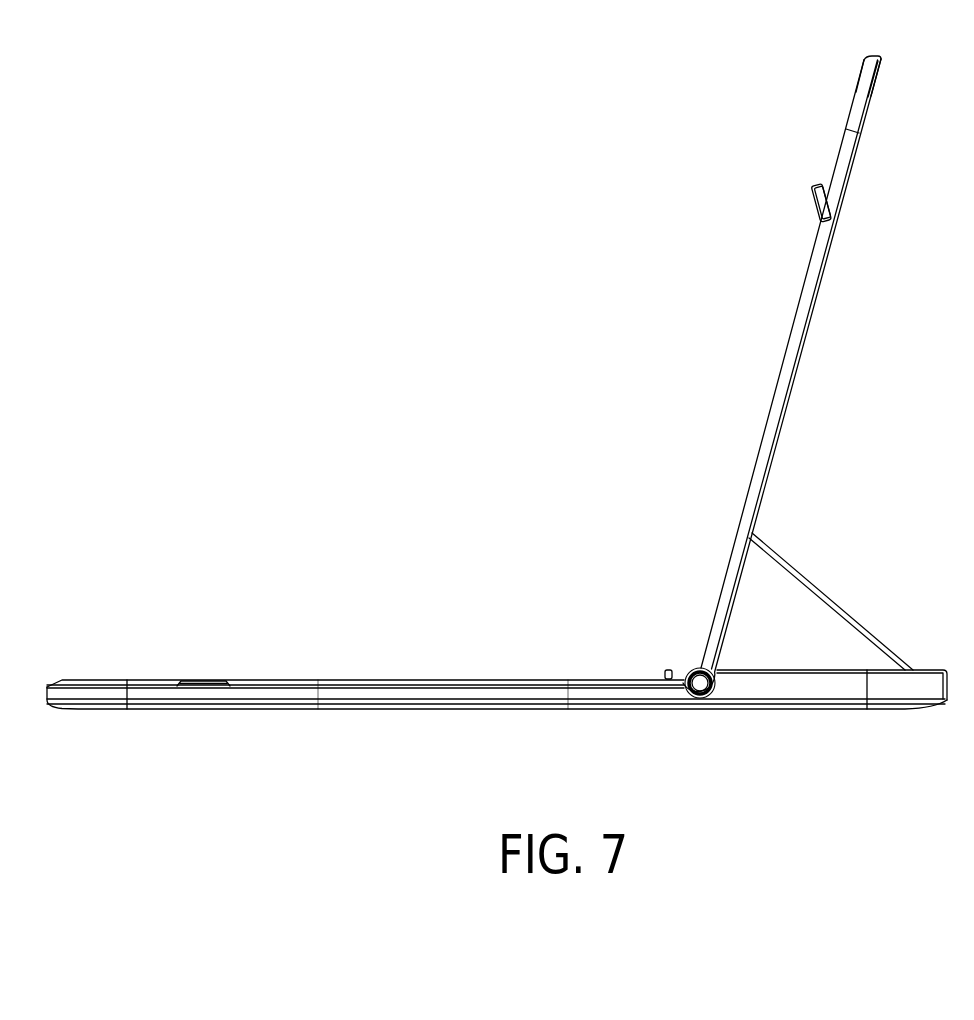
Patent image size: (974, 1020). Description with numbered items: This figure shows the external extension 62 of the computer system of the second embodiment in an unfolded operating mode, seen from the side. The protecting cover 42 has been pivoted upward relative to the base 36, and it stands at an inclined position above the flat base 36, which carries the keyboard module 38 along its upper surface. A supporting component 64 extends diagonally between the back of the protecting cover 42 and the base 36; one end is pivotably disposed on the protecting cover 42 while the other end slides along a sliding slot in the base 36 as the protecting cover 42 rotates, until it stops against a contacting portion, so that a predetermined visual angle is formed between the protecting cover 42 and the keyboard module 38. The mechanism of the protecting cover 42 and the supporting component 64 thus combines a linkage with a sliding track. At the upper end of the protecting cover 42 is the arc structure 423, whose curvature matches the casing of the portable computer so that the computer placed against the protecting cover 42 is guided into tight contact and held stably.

The external extension 62 is at (400, 292).
The protecting cover 42 is at (813, 282).
The arc structure 423 is at (858, 56).
The supporting component 64 is at (848, 614).
The keyboard module 38 is at (400, 680).
The base 36 is at (777, 693).